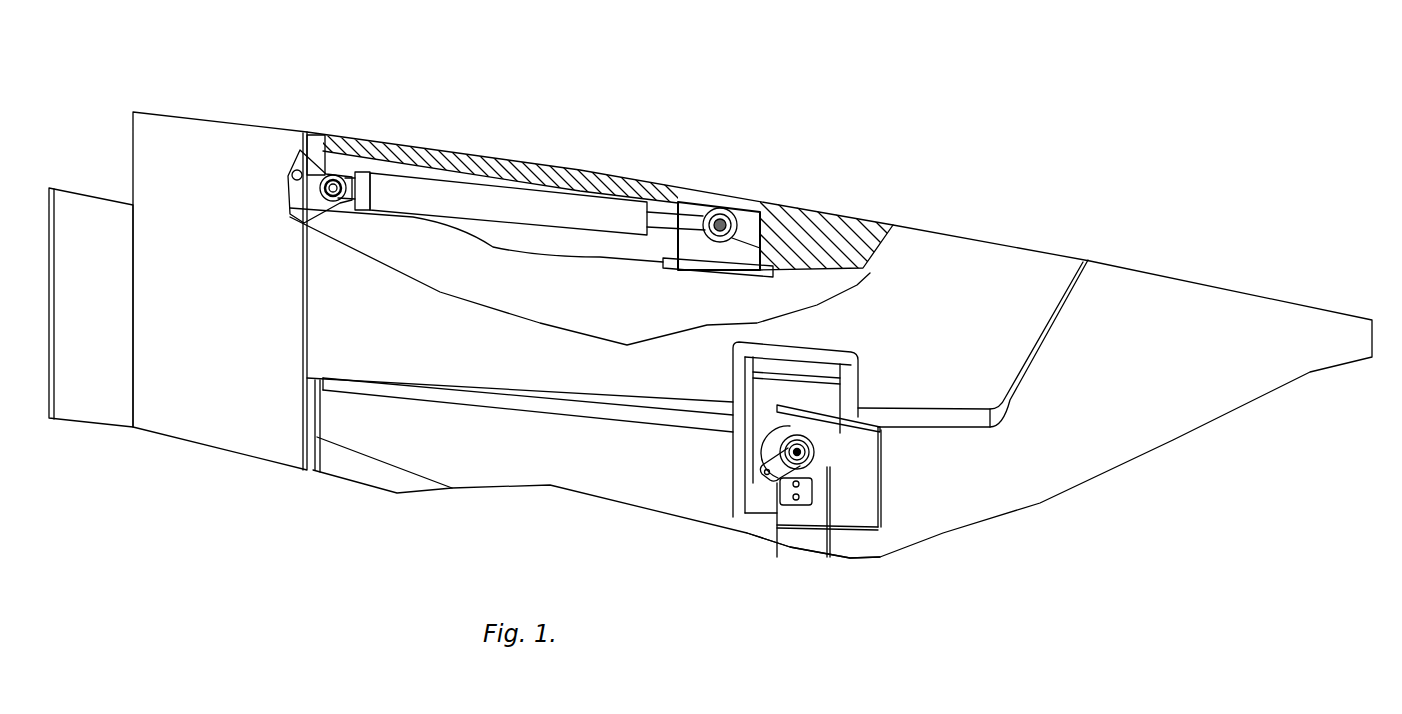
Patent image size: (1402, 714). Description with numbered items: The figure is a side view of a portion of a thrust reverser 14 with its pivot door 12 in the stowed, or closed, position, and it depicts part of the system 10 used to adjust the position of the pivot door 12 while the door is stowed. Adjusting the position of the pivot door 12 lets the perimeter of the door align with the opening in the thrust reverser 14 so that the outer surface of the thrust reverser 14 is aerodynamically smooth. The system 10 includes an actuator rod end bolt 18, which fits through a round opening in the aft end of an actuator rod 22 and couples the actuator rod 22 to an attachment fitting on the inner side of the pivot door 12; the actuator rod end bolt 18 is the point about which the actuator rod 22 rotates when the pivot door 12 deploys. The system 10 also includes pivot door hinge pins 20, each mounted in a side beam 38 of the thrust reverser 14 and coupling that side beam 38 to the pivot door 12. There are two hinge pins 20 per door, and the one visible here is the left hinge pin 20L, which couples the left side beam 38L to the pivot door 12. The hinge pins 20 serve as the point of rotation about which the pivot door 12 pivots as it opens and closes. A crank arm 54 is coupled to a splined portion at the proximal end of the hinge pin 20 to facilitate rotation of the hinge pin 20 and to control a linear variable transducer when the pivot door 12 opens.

The system 10 is at (613, 137).
The pivot door 12 is at (853, 232).
The thrust reverser 14 is at (202, 88).
The actuator rod end bolt 18 is at (731, 213).
The pivot door hinge pin 20 is at (775, 424).
The left hinge pin 20L is at (800, 450).
The actuator rod 22 is at (663, 220).
The side beam 38 is at (873, 560).
The left side beam 38L is at (857, 457).
The crank arm 54 is at (760, 468).